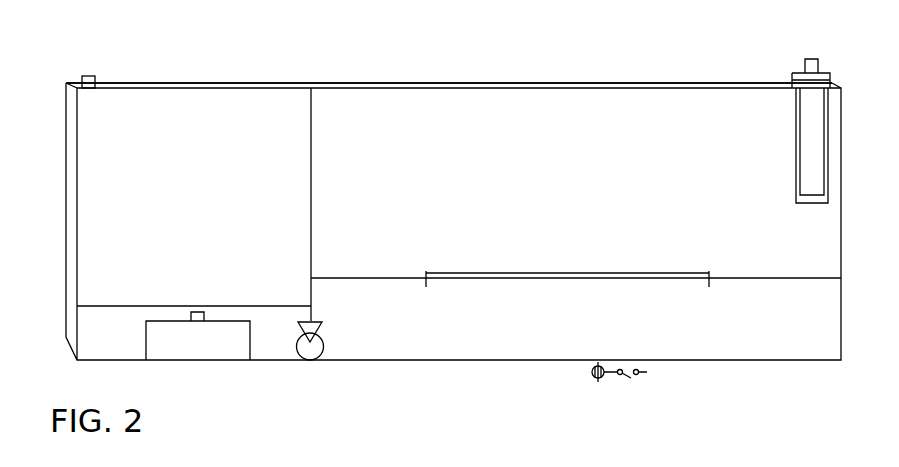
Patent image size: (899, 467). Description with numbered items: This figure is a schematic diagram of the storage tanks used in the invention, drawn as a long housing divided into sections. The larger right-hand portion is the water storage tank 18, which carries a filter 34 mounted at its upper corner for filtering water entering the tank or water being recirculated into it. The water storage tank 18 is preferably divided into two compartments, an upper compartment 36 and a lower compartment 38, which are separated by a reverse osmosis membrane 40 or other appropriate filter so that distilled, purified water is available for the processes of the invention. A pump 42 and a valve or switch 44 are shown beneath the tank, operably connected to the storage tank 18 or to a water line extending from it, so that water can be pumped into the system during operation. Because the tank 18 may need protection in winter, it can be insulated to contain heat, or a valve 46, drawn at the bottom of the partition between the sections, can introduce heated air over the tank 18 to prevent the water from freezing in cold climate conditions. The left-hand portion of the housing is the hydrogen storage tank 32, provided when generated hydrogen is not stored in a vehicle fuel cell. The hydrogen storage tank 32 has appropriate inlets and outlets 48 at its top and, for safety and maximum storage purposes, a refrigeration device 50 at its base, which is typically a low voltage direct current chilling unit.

The water storage tank 18 is at (416, 84).
The hydrogen storage tank 32 is at (184, 76).
The filter 34 is at (825, 72).
The ice making compartment 36 is at (493, 179).
The compartment 38 is at (488, 342).
The reverse osmosis membrane 40 is at (581, 271).
The pump 42 is at (597, 381).
The valve or switch 44 is at (630, 378).
The valve 46 is at (312, 358).
The inlets and outlets 48 is at (87, 75).
The refrigeration device 50 is at (184, 357).